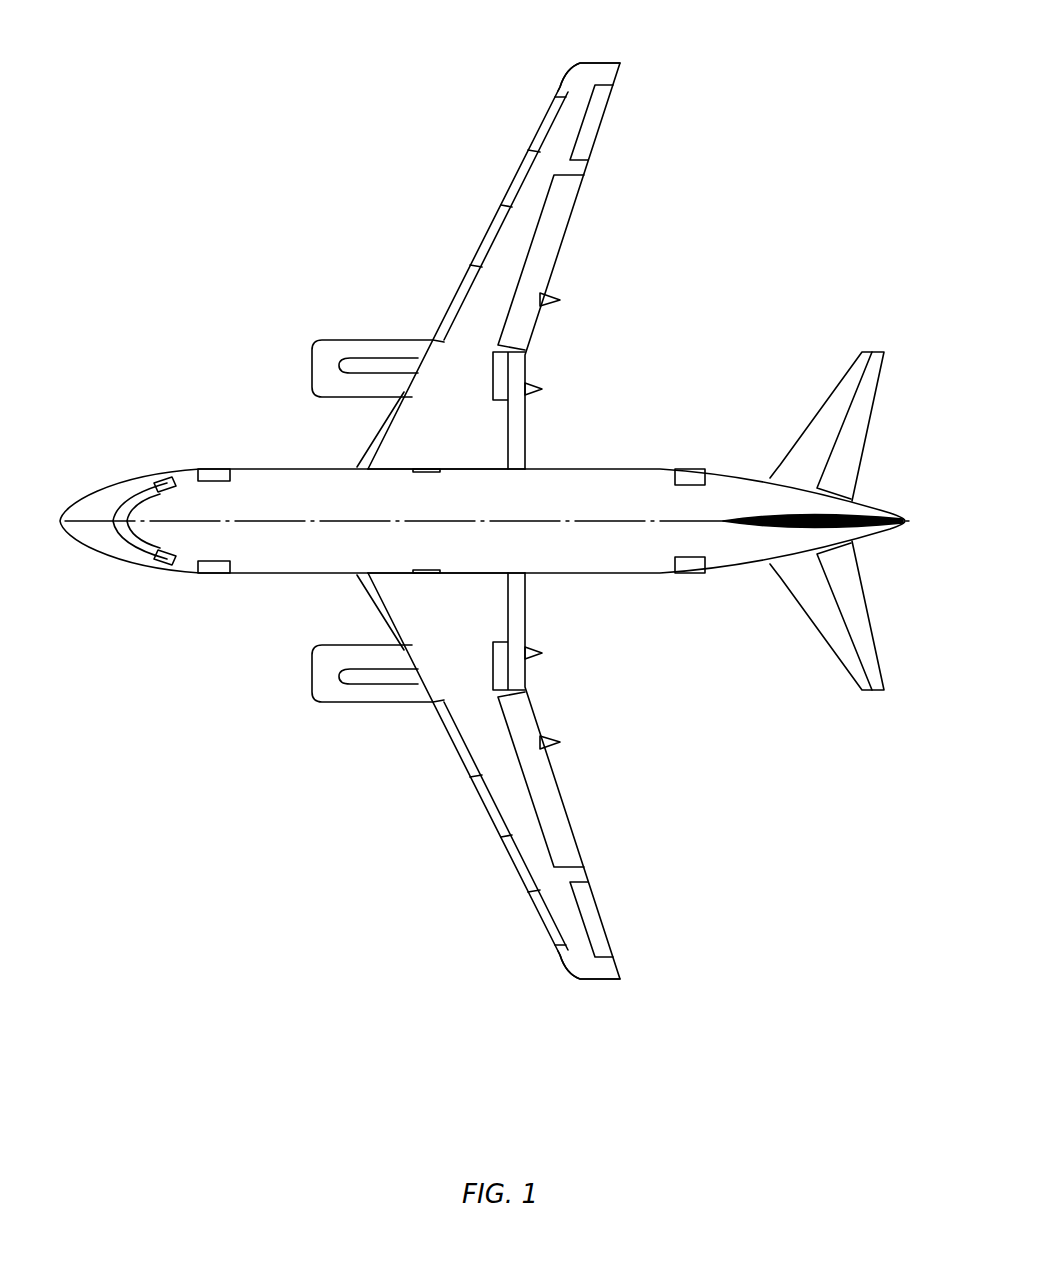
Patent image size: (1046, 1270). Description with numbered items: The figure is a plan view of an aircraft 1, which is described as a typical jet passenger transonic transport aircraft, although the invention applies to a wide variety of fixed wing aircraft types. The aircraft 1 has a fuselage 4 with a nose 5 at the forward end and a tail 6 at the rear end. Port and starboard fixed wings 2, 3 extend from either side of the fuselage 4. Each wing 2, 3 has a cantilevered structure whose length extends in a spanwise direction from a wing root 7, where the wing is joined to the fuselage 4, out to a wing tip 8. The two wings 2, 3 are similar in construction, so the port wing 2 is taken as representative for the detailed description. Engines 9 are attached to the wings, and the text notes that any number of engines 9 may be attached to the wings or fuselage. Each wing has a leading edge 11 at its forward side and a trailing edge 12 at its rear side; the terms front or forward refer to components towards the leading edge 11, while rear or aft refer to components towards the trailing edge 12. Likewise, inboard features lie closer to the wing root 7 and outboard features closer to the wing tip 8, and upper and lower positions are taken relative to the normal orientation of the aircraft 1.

The aircraft 1 is at (252, 833).
The port fixed wing 2 is at (505, 782).
The starboard fixed wing 3 is at (532, 210).
The fuselage 4 is at (293, 488).
The nose 5 is at (80, 519).
The tail 6 is at (907, 522).
The wing root 7 is at (473, 470).
The wing tip 8 is at (601, 62).
The engine 9 is at (327, 357).
The leading edge 11 is at (455, 292).
The trailing edge 12 is at (552, 272).